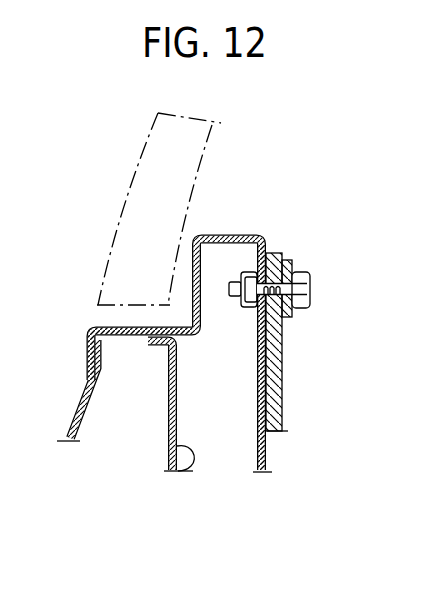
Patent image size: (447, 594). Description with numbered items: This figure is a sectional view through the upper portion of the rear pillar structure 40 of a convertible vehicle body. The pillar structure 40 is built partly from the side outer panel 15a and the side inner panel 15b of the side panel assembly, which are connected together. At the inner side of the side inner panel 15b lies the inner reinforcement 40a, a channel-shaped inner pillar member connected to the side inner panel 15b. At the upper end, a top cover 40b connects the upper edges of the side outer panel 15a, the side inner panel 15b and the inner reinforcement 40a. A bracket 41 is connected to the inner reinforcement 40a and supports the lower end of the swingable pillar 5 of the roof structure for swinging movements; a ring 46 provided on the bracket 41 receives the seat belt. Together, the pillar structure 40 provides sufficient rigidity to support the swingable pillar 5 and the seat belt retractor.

The swingable pillar 5 is at (205, 153).
The pillar structure 40 is at (276, 226).
The inner reinforcement 40a is at (257, 452).
The top cover 40b is at (118, 326).
The side outer panel 15a is at (78, 398).
The side inner panel 15b is at (173, 474).
The bracket 41 is at (282, 395).
The ring 46 is at (298, 317).